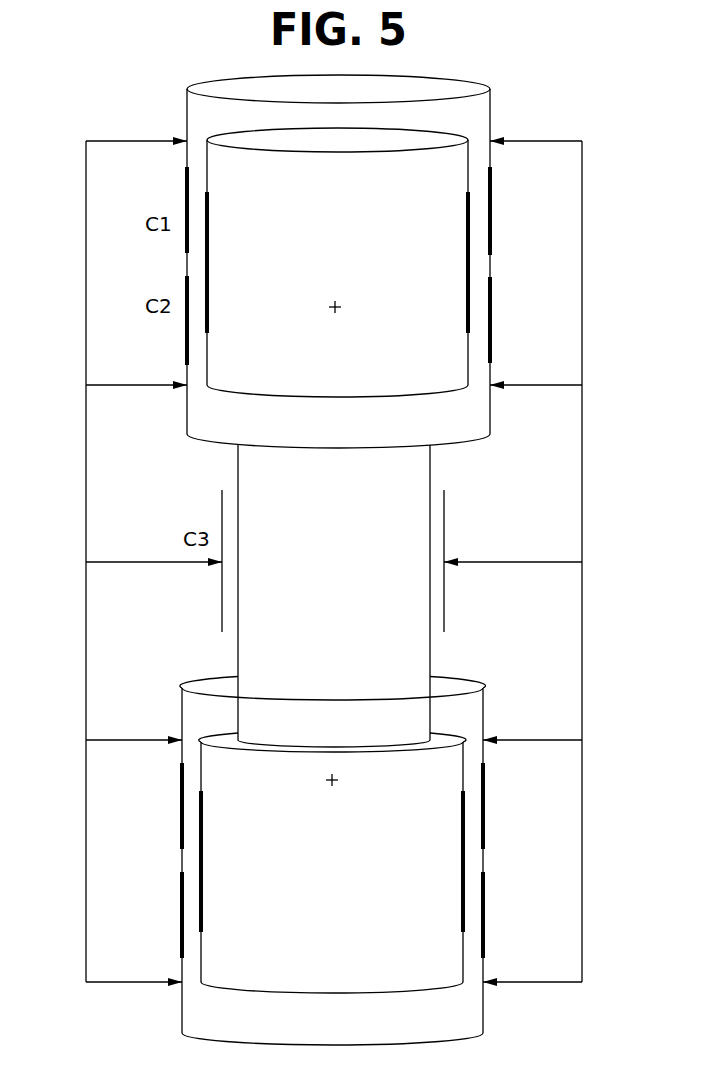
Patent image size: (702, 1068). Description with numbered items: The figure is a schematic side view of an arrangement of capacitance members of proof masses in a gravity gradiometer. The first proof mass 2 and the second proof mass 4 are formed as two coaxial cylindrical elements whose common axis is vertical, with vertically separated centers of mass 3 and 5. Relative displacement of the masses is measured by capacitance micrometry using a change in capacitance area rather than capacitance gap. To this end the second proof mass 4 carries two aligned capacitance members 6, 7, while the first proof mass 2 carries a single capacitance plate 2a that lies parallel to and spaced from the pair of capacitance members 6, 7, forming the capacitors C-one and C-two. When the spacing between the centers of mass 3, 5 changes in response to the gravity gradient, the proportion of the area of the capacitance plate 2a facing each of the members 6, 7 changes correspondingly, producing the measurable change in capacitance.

The first proof mass 2 is at (342, 586).
The capacitance plate of the first proof mass 2a is at (207, 261).
The center of mass of the first proof mass 3 is at (335, 301).
The second proof mass 4 is at (582, 540).
The center of mass of the second proof mass 5 is at (331, 786).
The capacitance member of the second proof mass 6 is at (186, 192).
The capacitance member of the second proof mass 7 is at (186, 333).